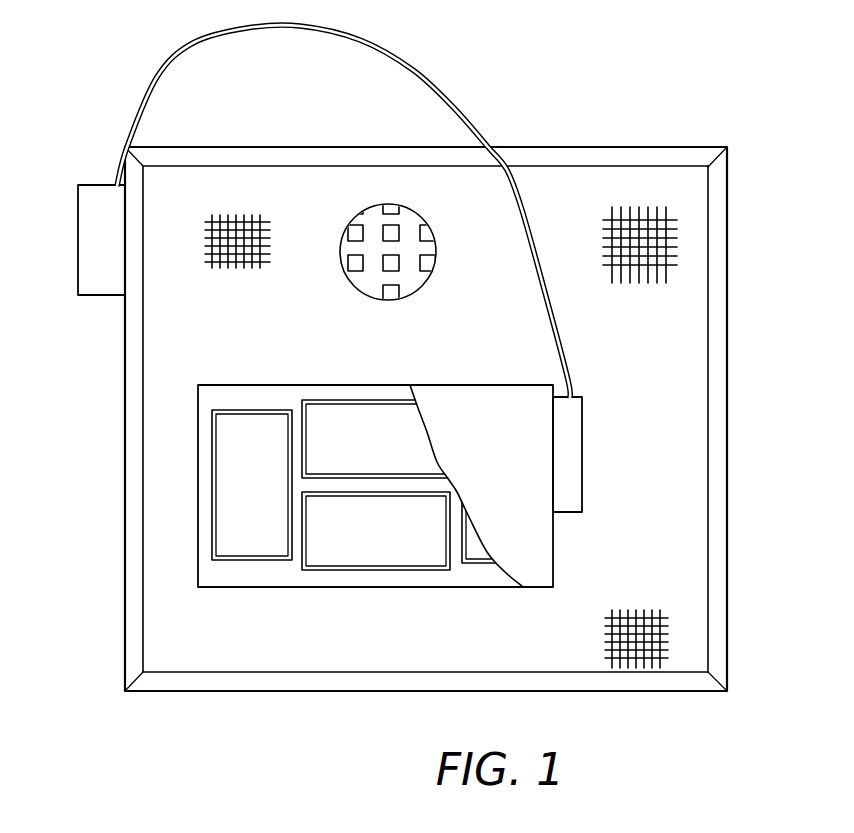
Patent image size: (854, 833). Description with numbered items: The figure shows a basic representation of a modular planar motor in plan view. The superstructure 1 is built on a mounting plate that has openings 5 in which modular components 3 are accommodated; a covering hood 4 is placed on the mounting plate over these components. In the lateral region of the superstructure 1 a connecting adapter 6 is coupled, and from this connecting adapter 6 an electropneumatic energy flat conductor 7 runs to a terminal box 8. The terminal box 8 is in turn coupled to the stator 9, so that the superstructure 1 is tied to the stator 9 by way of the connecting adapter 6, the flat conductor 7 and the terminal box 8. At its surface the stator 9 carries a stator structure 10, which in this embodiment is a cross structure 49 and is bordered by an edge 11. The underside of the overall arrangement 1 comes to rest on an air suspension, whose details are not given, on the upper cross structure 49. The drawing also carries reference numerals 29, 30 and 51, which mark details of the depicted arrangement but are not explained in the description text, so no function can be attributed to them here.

The superstructure 1 is at (527, 450).
The modular components 3 is at (238, 432).
The covering hood 4 is at (530, 553).
The openings 5 is at (218, 445).
The connecting adapter 6 is at (570, 413).
The electropneumatic energy flat conductor 7 is at (413, 72).
The terminal box 8 is at (93, 228).
The stator 9 is at (682, 650).
The stator structure 10 is at (677, 575).
The edge 11 is at (717, 482).
The aperture 29 is at (350, 268).
The enlarged detail 30 is at (413, 265).
The cross structure 49 is at (433, 238).
The panel edge 51 is at (685, 538).